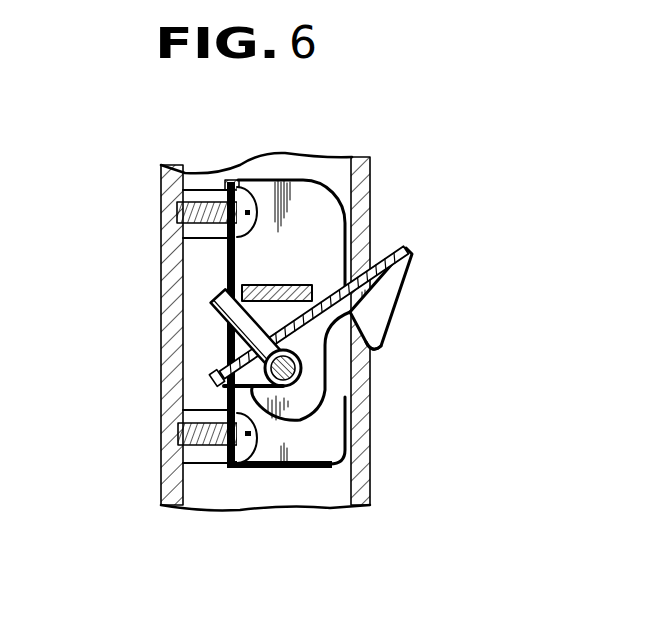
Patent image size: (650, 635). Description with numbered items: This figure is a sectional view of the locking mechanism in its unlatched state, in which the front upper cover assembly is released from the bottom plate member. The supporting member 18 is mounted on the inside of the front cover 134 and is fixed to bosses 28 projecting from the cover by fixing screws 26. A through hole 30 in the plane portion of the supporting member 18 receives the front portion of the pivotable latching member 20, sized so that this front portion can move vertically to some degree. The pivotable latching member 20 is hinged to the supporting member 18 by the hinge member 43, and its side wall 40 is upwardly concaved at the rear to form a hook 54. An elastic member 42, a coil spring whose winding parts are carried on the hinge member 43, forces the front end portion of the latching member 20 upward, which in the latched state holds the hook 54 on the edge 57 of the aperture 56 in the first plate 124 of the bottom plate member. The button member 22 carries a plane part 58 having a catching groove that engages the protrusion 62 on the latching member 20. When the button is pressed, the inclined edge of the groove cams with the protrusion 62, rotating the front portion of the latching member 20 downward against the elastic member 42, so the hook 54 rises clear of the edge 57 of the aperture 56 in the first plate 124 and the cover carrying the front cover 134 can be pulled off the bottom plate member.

The supporting member 18 is at (247, 255).
The pivotable latching member 20 is at (335, 373).
The button member 22 is at (300, 273).
The fixing screws 26 is at (176, 213).
The bosses 28 is at (193, 195).
The through hole 30 is at (230, 282).
The side wall 40 is at (300, 395).
The elastic member 42 is at (267, 393).
The hinge member 43 is at (358, 278).
The hook 54 is at (390, 291).
The aperture 56 is at (375, 240).
The edge 57 is at (375, 357).
The plane part 58 is at (278, 283).
The protrusion 62 is at (223, 328).
The first plate 124 is at (373, 243).
The front cover 134 is at (173, 333).